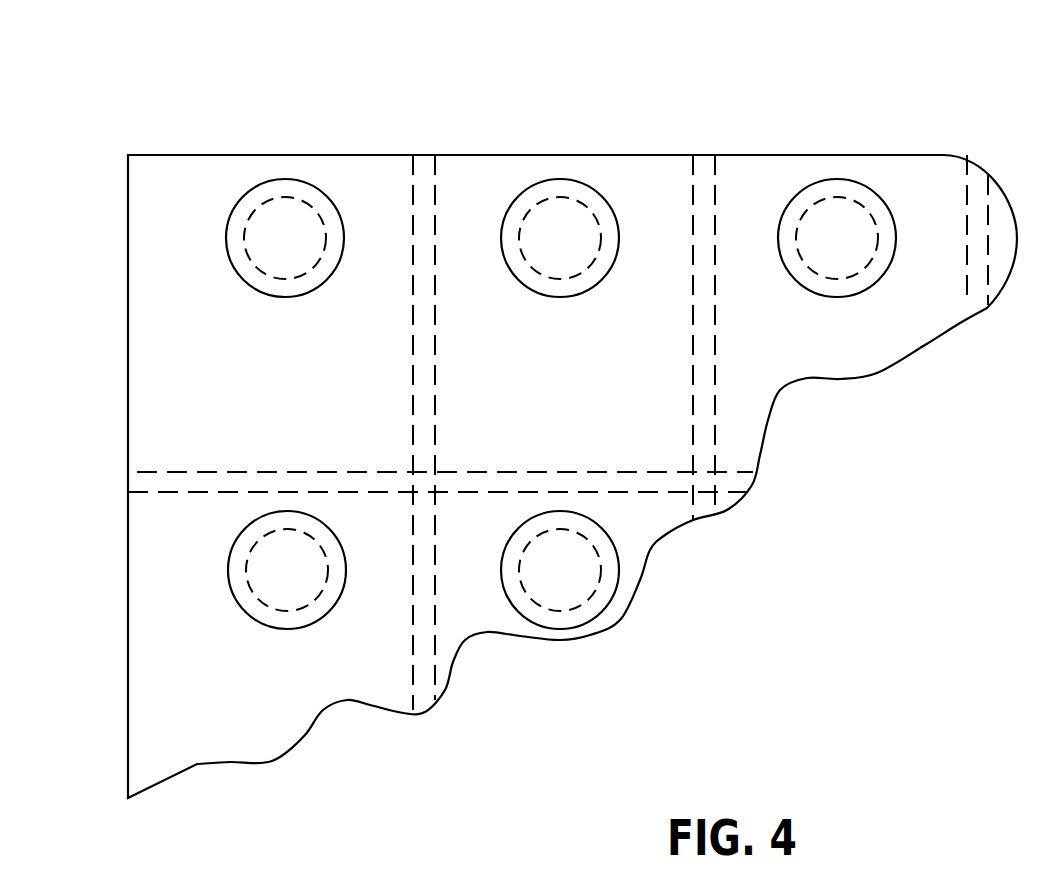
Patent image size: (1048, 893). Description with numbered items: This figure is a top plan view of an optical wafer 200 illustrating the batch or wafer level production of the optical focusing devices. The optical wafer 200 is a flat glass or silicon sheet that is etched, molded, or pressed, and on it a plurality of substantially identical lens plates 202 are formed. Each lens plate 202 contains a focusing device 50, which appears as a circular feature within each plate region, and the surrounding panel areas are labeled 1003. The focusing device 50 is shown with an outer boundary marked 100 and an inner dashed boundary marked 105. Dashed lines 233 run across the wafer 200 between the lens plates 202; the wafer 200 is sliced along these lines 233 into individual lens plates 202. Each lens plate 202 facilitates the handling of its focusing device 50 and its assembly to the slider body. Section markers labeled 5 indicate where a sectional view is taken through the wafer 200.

The optical wafer 200 is at (455, 29).
The lens plate 202 is at (117, 230).
The panel section 1003 is at (158, 183).
The lines 233 is at (370, 463).
The fastener hole 100 is at (262, 178).
The focusing device 50 is at (313, 175).
The inner aperture 105 is at (232, 242).
The section line 5 is at (482, 237).